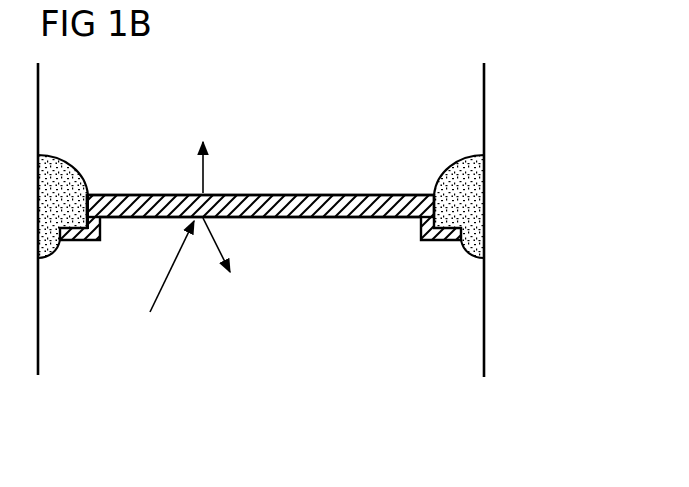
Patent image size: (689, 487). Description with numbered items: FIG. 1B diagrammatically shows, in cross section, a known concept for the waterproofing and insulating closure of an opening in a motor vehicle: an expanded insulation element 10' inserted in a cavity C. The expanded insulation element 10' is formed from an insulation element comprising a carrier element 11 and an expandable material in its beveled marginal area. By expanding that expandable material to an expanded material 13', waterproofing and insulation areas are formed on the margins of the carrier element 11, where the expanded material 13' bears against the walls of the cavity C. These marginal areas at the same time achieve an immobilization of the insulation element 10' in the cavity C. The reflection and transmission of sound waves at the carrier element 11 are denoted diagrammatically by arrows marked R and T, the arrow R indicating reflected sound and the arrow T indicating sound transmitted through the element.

The expanded insulation element 10' is at (296, 182).
The carrier element 11 is at (318, 217).
The expanded material 13' is at (494, 206).
The cavity C is at (487, 340).
The transmission of sound waves T is at (206, 181).
The reflection of sound waves R is at (226, 256).